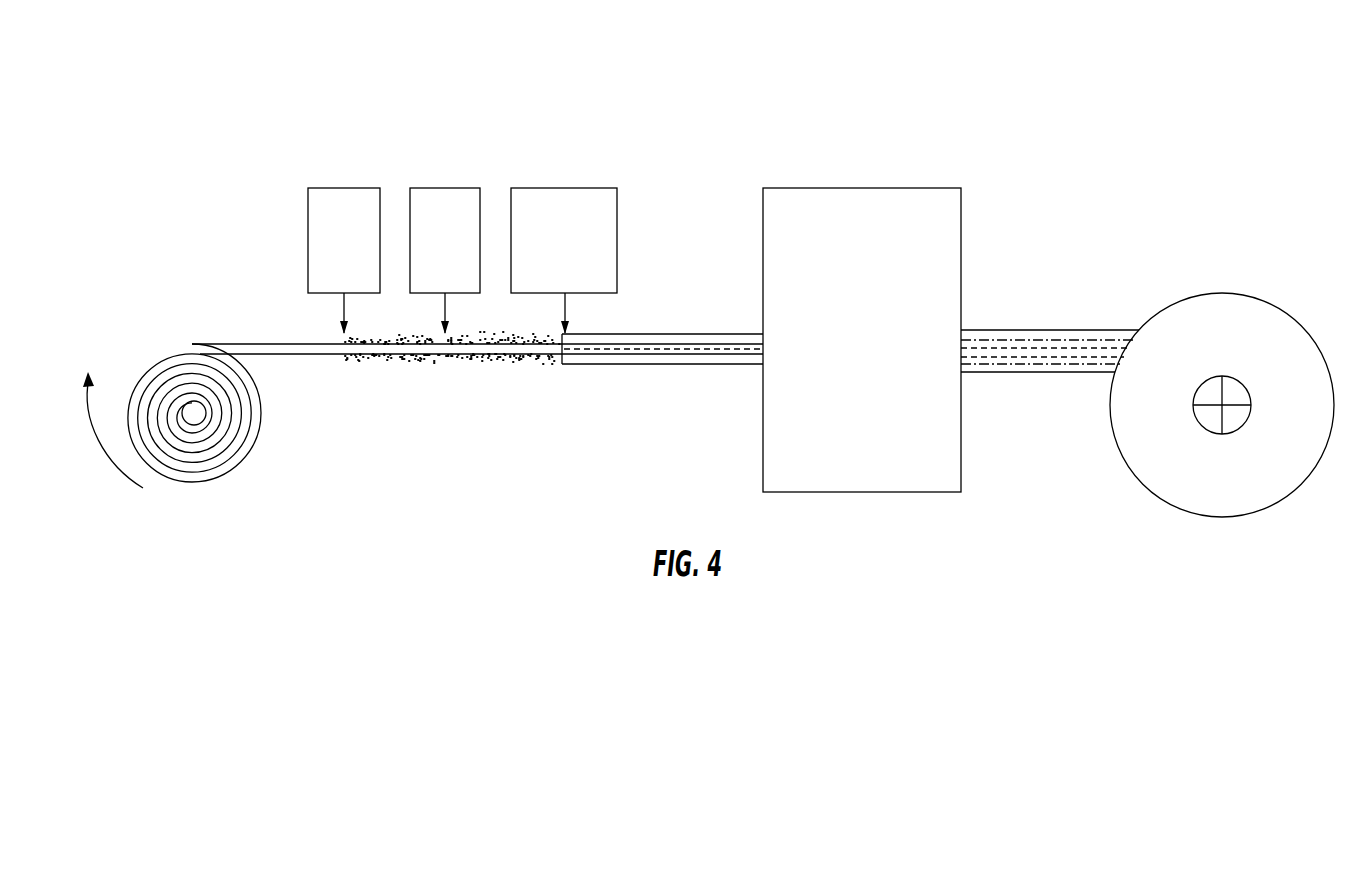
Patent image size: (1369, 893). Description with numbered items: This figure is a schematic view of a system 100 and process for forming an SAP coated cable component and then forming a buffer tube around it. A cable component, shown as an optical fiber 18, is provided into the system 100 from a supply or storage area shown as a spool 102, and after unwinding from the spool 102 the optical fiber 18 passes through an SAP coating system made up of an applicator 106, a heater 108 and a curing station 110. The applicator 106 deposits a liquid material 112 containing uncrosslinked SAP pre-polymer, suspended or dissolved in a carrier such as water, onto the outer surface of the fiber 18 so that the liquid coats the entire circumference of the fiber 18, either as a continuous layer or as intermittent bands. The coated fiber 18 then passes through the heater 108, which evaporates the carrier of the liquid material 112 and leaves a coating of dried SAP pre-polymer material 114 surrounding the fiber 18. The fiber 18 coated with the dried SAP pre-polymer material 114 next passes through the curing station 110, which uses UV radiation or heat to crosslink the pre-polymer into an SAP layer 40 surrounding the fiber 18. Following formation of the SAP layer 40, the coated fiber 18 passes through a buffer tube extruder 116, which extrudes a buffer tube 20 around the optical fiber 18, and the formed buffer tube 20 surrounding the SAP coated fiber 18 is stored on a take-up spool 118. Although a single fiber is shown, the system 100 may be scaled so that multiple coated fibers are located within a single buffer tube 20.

The system 100 is at (1148, 72).
The spool 102 is at (228, 483).
The optical fiber 18 is at (243, 344).
The applicator 106 is at (318, 188).
The heater 108 is at (418, 188).
The curing station 110 is at (553, 188).
The liquid material 112 is at (382, 364).
The dried SAP pre-polymer material 114 is at (513, 364).
The SAP layer 40 is at (644, 333).
The buffer tube extruder 116 is at (898, 188).
The buffer tube 20 is at (1002, 330).
The take-up spool 118 is at (1210, 315).